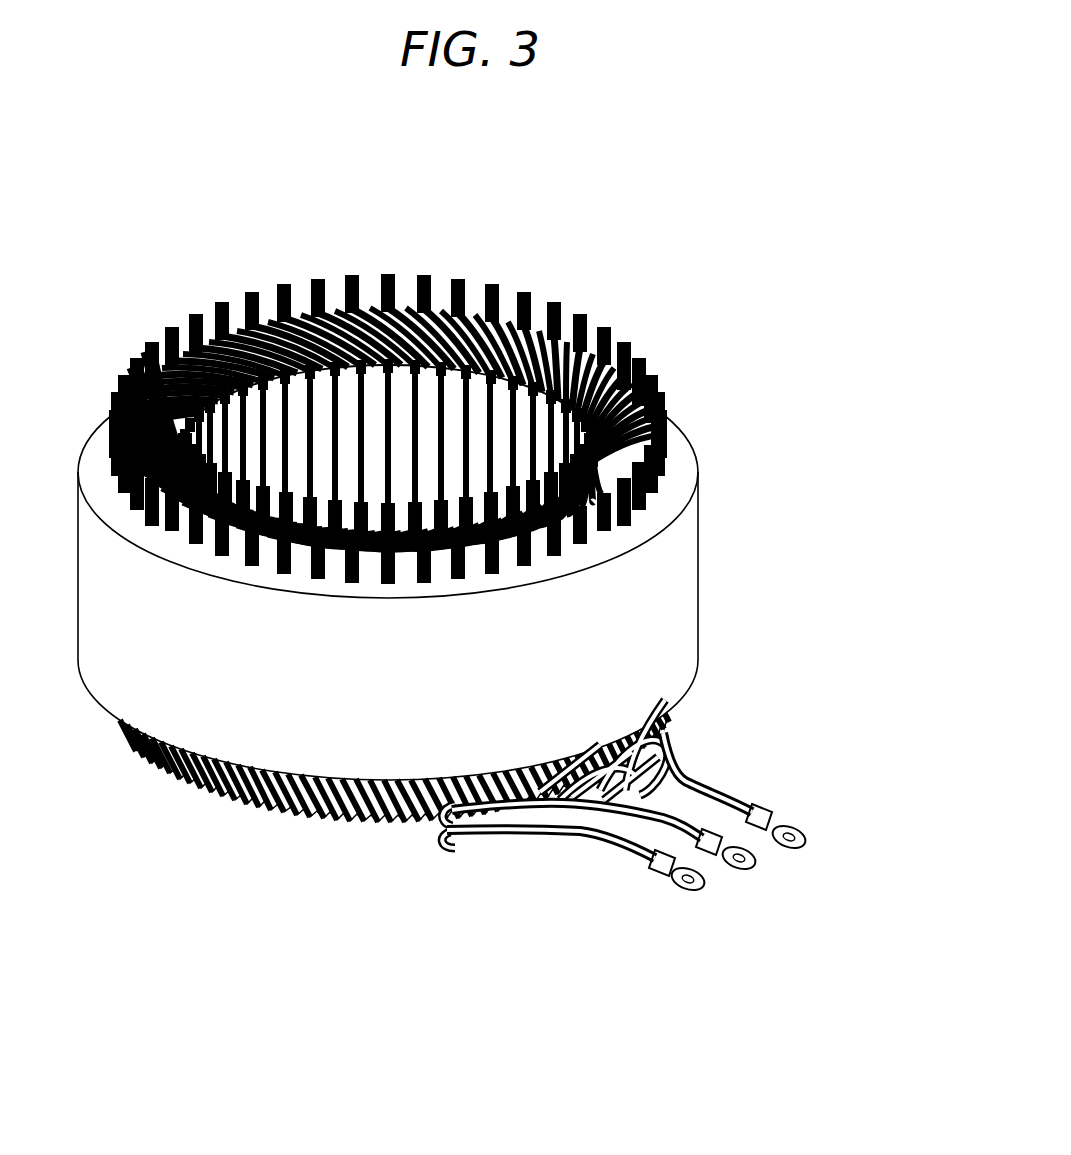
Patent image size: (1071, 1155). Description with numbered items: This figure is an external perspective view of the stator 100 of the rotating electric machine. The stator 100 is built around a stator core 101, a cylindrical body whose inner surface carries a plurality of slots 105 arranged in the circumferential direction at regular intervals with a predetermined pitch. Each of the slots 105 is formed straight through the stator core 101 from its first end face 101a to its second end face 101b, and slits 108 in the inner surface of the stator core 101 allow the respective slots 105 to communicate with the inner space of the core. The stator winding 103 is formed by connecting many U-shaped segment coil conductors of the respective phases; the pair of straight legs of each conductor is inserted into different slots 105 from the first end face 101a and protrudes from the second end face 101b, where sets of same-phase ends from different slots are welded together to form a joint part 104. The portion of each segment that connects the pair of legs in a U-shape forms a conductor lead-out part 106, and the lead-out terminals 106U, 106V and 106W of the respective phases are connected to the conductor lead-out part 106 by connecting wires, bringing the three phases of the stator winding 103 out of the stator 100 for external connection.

The stator 100 is at (636, 313).
The stator core 101 is at (640, 640).
The first end face 101a is at (670, 703).
The second end face 101b is at (673, 460).
The stator winding 103 is at (198, 535).
The joint part 104 is at (135, 353).
The slots 105 is at (597, 540).
The conductor lead-out part 106 is at (237, 800).
The lead-out terminal 106U is at (683, 890).
The lead-out terminal 106V is at (745, 870).
The lead-out terminal 106W is at (806, 838).
The slits 108 is at (273, 300).